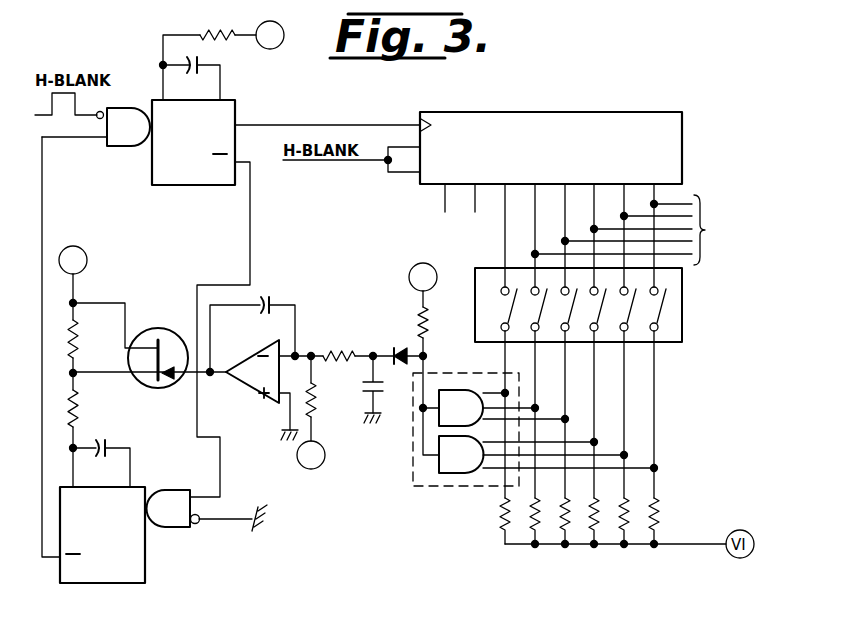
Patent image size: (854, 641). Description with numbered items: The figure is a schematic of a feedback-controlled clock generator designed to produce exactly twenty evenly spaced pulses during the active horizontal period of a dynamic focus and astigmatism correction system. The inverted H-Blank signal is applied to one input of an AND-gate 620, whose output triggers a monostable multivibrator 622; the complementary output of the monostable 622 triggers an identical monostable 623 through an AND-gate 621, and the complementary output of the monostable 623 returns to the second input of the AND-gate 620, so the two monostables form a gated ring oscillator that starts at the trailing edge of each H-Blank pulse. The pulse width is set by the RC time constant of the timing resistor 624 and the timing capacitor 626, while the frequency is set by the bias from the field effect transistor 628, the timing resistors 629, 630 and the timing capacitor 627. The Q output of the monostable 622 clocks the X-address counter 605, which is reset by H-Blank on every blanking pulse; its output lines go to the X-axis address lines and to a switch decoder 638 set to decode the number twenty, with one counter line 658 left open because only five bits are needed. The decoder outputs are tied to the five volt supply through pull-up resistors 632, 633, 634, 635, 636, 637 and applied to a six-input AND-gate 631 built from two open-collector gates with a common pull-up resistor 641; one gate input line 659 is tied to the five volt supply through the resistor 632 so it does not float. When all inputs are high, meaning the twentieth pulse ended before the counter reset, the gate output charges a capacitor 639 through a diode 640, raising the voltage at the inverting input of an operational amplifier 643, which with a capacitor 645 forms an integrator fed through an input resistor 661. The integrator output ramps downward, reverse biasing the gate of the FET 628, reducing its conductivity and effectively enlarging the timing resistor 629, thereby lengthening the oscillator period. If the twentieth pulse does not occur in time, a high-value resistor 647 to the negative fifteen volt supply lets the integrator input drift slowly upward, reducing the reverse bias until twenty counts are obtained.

The X-address counter 605 is at (652, 112).
The AND-gate 620 is at (118, 147).
The AND-gate 621 is at (168, 528).
The monostable multivibrator 622 is at (237, 111).
The monostable 623 is at (147, 572).
The timing resistor 624 is at (206, 31).
The timing capacitor 626 is at (197, 58).
The timing capacitor 627 is at (104, 441).
The field effect transistor 628 is at (143, 387).
The timing resistor 629 is at (70, 342).
The timing resistor 630 is at (94, 438).
The AND-gate 631 is at (430, 487).
The pull-up resistor 632 is at (502, 515).
The pull-up resistor 633 is at (530, 520).
The pull-up resistor 634 is at (560, 520).
The pull-up resistor 635 is at (590, 520).
The pull-up resistor 636 is at (624, 528).
The pull-up resistor 637 is at (659, 520).
The decoder 638 is at (682, 337).
The capacitor 639 is at (398, 395).
The diode 640 is at (404, 351).
The pull-up resistor 641 is at (418, 312).
The operational amplifier 643 is at (272, 403).
The capacitor 645 is at (266, 304).
The resistor 647 is at (318, 412).
The line 658 is at (503, 238).
The input line 659 is at (500, 357).
The input resistor 661 is at (346, 352).